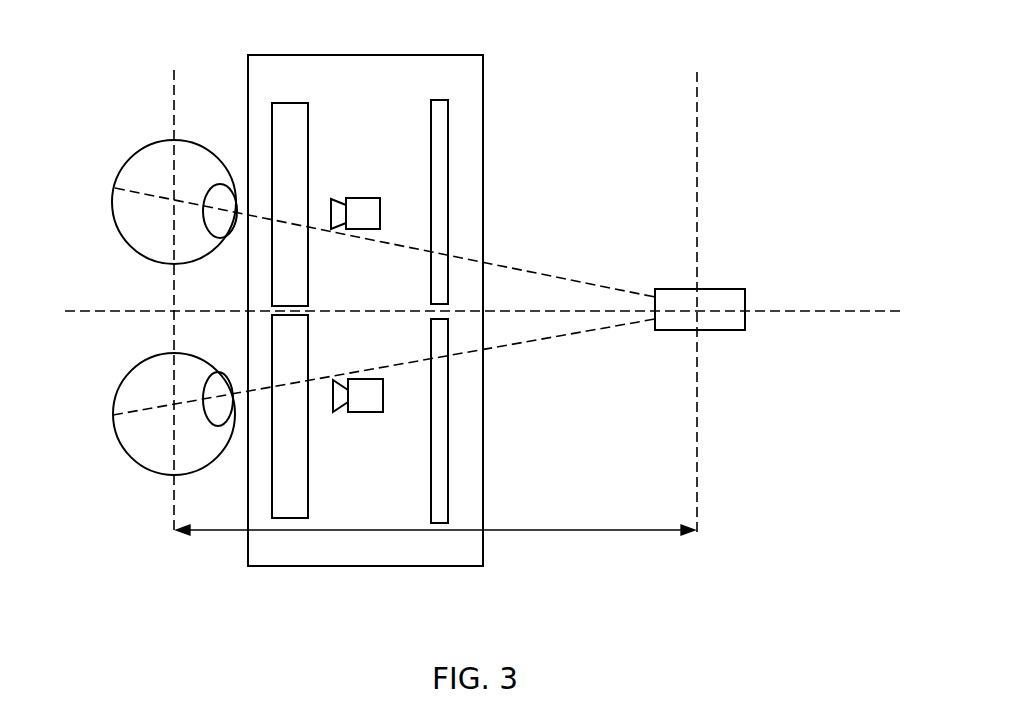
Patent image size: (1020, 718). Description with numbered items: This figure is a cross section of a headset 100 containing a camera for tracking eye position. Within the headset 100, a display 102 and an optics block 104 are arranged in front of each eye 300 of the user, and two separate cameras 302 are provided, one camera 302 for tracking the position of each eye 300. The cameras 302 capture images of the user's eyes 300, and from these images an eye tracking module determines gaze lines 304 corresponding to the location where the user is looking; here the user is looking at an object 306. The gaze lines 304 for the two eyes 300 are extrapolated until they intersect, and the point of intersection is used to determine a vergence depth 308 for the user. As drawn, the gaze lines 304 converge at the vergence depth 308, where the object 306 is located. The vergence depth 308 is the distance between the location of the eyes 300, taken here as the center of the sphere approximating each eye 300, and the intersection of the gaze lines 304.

The headset 100 is at (455, 56).
The display 102 is at (442, 150).
The optics block 104 is at (285, 110).
The eye 300 is at (112, 202).
The camera 302 is at (353, 208).
The gaze line 304 is at (607, 327).
The object 306 is at (735, 297).
The vergence depth 308 is at (673, 529).